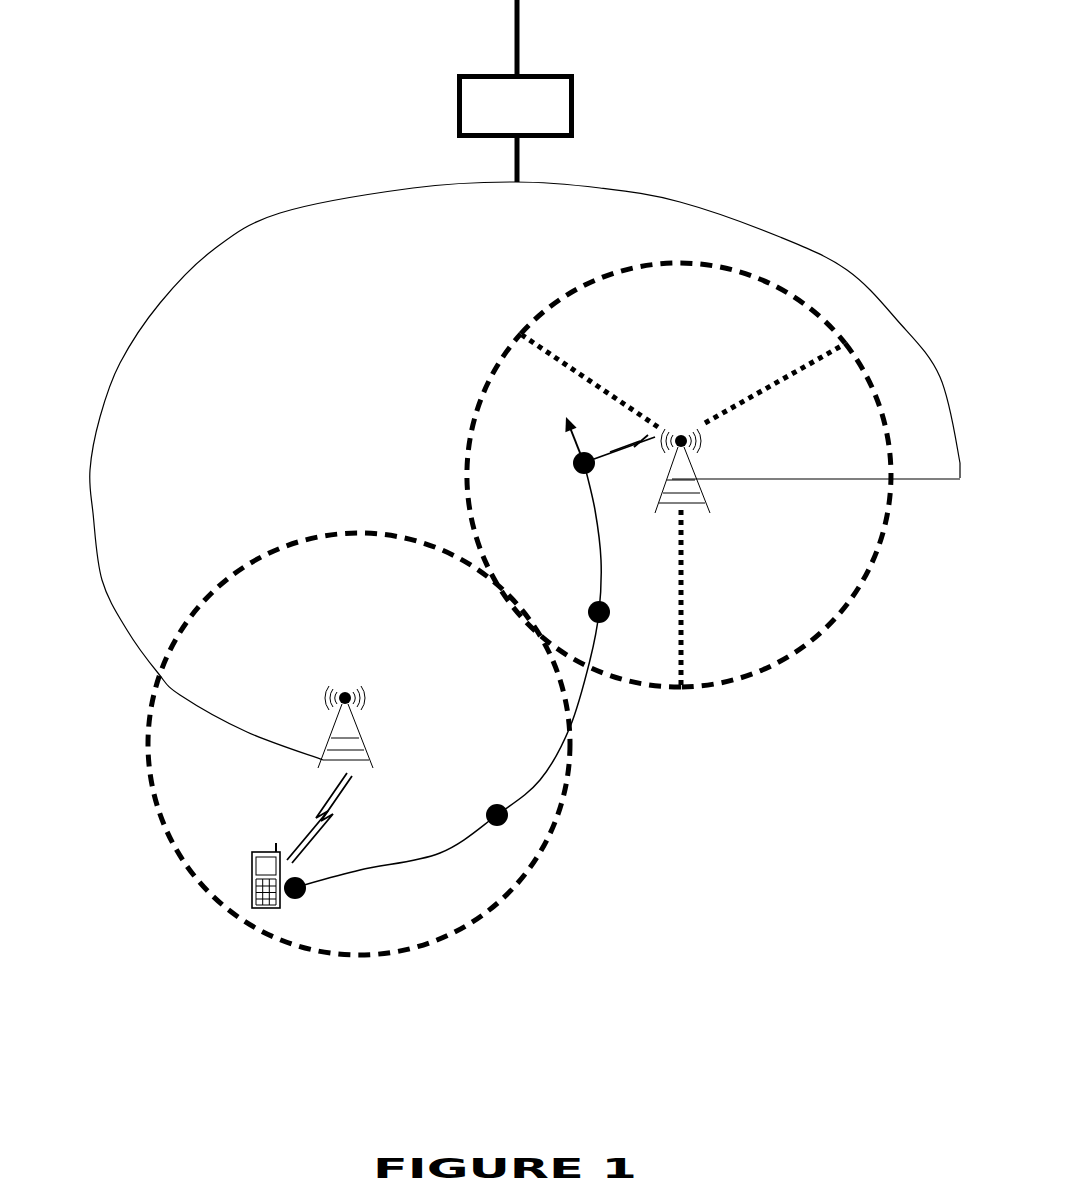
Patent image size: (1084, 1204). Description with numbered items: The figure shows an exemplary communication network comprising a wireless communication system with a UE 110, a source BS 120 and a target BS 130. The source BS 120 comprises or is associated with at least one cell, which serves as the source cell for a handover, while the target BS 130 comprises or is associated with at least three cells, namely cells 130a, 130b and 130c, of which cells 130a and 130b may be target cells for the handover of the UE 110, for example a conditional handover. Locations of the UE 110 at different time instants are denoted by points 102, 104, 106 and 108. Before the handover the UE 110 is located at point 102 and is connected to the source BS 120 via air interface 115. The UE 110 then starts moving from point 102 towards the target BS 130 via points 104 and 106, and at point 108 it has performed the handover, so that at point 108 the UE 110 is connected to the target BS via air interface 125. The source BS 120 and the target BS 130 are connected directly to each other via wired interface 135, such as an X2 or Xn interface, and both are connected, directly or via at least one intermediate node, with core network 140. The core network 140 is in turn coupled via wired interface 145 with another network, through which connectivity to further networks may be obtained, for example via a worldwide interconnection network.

The point 102 is at (300, 893).
The point 104 is at (490, 808).
The point 106 is at (586, 612).
The point 108 is at (574, 467).
The UE 110 is at (252, 877).
The air interface 115 is at (333, 803).
The source BS 120 is at (333, 746).
The air interface 125 is at (647, 448).
The target BS 130 is at (700, 497).
The cell 130a is at (505, 383).
The cell 130b is at (837, 565).
The cell 130c is at (673, 282).
The wired interface 135 is at (830, 262).
The core network 140 is at (540, 117).
The wired interface 145 is at (521, 1).